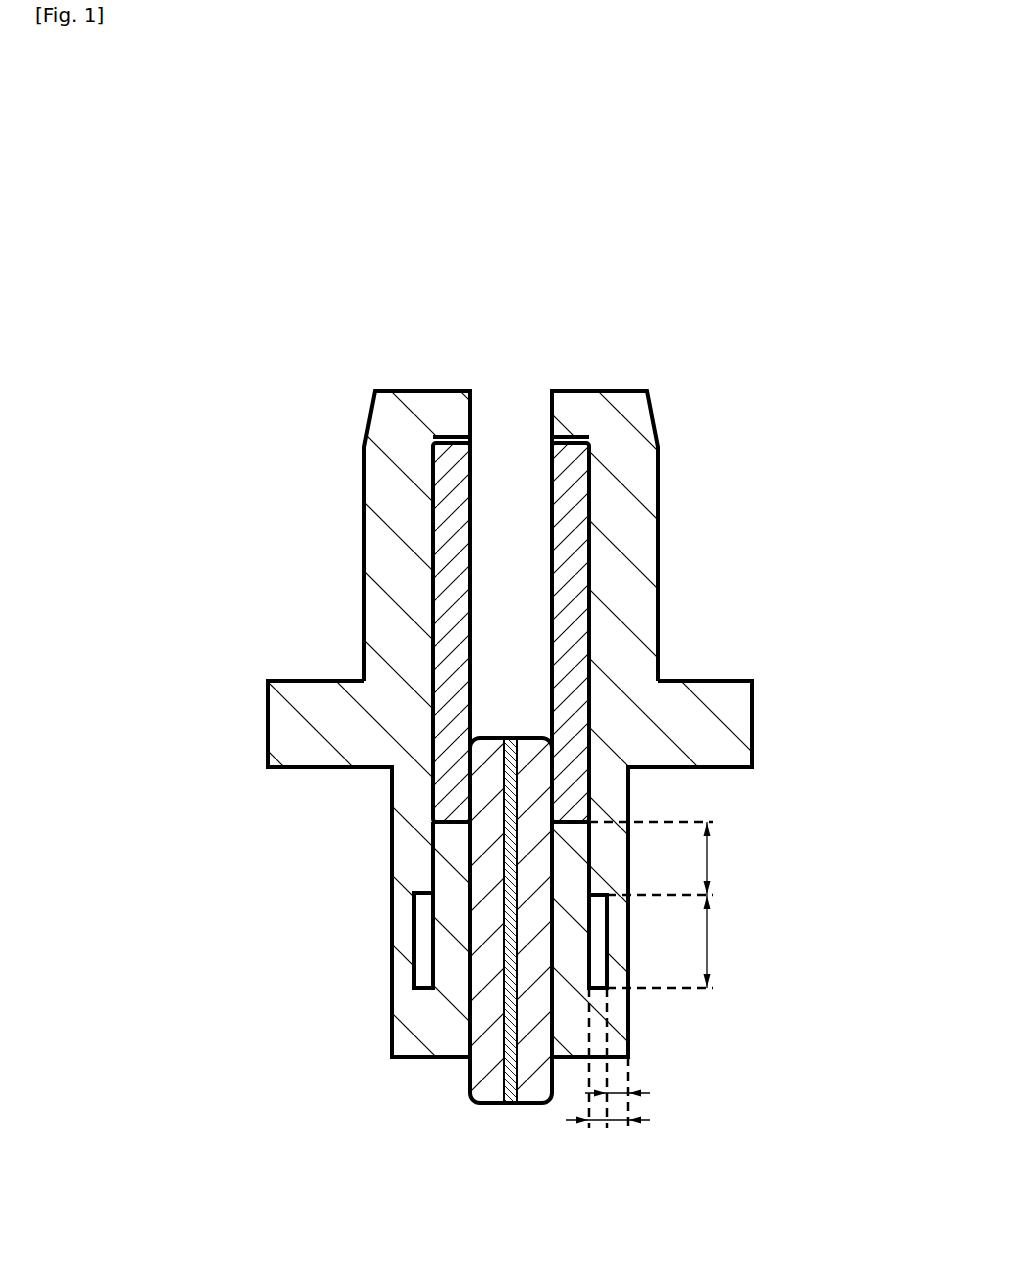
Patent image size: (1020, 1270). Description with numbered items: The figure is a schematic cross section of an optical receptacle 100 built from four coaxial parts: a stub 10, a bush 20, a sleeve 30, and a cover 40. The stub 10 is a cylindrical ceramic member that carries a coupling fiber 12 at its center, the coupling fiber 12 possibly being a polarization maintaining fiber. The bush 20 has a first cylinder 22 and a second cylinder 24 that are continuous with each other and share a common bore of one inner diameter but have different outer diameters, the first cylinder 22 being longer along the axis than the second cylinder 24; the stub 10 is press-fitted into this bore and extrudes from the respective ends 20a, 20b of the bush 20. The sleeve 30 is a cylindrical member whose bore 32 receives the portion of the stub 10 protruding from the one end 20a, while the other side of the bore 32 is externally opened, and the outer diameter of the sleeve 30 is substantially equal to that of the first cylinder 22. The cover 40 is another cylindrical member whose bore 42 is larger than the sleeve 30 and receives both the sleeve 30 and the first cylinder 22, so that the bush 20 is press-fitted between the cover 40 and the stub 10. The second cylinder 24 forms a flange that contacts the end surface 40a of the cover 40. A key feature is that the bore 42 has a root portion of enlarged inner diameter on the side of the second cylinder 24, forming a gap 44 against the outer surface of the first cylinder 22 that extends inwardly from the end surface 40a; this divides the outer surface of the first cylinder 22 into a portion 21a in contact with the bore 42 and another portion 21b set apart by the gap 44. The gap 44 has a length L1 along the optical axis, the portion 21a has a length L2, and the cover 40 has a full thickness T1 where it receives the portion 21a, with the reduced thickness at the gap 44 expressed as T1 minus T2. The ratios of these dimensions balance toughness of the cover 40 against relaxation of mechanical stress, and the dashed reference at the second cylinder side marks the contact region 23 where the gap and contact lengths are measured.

The optical receptacle 100 is at (532, 749).
The stub 10 is at (471, 1097).
The coupling fiber 12 is at (510, 1105).
The bush 20 is at (293, 962).
The end of bush 20a is at (449, 819).
The end of bush 20b is at (415, 1060).
The portion in contact 21a is at (445, 863).
The portion apart 21b is at (445, 922).
The first cylinder 22 is at (430, 968).
The contact surface 23 is at (680, 816).
The second cylinder 24 is at (405, 1020).
The sleeve 30 is at (440, 528).
The bore 32 is at (495, 657).
The cover 40 is at (640, 537).
The end surface 40a is at (618, 990).
The bore 42 is at (500, 432).
The gap 44 is at (595, 948).
The length of gap L1 is at (722, 941).
The length of contact portion L2 is at (722, 858).
The thickness of cover T1 is at (623, 1123).
The thickness dimension T2 is at (633, 1096).